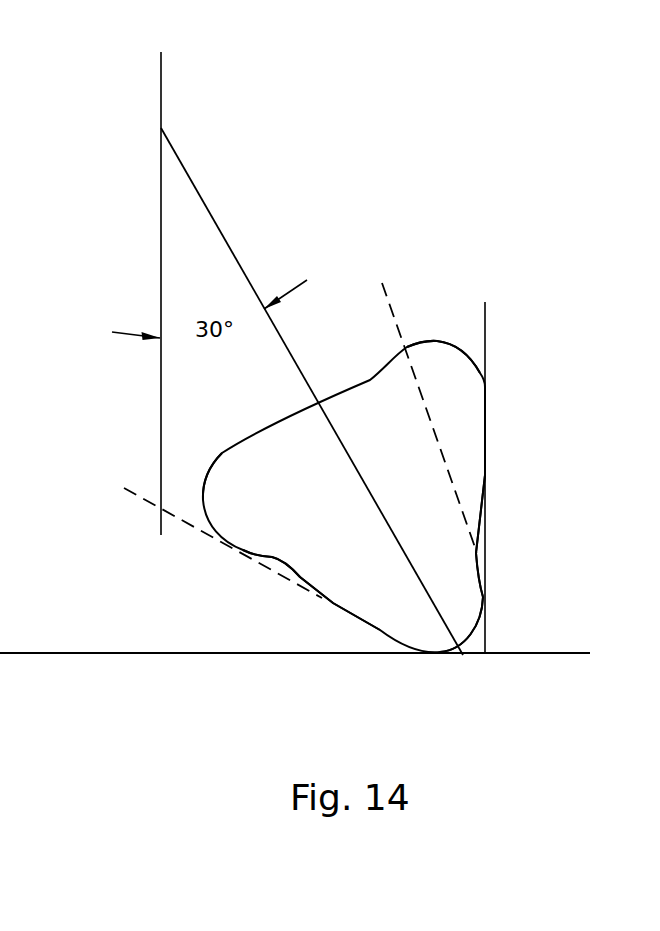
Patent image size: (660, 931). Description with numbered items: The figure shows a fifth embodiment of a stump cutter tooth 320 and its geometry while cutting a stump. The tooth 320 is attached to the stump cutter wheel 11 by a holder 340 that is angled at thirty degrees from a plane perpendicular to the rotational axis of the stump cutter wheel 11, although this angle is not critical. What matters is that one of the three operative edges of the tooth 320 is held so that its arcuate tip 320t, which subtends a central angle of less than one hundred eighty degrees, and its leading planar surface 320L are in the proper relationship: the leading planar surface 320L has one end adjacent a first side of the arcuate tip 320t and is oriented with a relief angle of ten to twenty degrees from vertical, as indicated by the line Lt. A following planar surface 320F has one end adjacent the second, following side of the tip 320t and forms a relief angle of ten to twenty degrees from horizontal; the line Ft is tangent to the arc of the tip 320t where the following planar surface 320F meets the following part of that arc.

The stump cutter wheel 11 is at (161, 77).
The holder 340 is at (203, 202).
The stump cutter tooth 320 is at (503, 362).
The leading planar surface 320L is at (477, 568).
The following planar surface 320F is at (380, 630).
The arcuate tip 320t is at (205, 482).
The tangent line Ft is at (147, 500).
The tangent line Lt is at (388, 298).